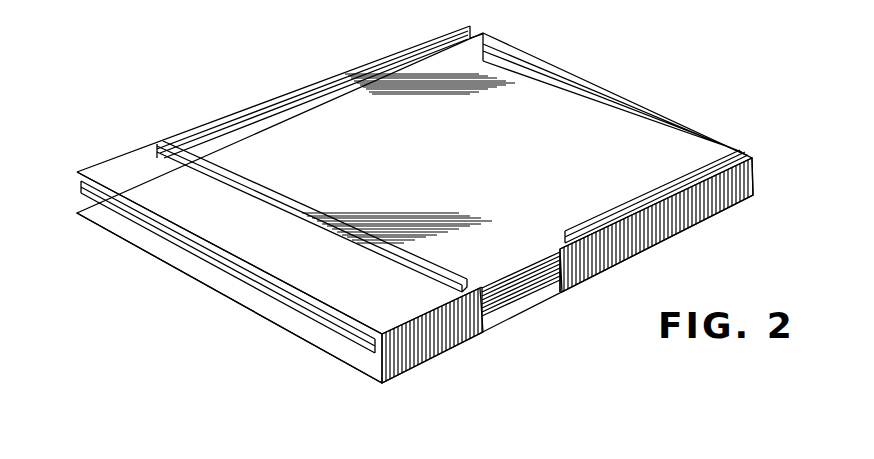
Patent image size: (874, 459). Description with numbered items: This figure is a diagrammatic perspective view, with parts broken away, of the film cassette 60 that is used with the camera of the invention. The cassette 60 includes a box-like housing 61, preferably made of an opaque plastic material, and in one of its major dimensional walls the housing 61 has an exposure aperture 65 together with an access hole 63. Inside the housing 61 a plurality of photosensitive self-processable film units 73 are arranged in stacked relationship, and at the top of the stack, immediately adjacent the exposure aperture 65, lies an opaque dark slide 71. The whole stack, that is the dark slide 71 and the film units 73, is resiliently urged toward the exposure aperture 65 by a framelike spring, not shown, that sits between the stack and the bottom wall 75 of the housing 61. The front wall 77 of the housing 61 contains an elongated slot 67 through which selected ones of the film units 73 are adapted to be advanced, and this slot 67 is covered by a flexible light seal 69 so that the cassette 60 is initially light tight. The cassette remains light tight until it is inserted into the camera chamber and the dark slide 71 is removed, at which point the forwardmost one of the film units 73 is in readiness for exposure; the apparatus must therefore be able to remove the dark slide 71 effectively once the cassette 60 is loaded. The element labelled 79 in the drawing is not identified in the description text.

The cassette 60 is at (655, 258).
The box-like housing 61 is at (756, 182).
The access hole 63 is at (486, 35).
The exposure aperture 65 is at (618, 152).
The elongated slot 67 is at (347, 336).
The flexible light seal 69 is at (150, 223).
The dark slide 71 is at (520, 278).
The photosensitive self-processable film units 73 is at (523, 302).
The bottom wall 75 is at (425, 366).
The front wall 77 is at (215, 273).
The rail 79 is at (590, 80).